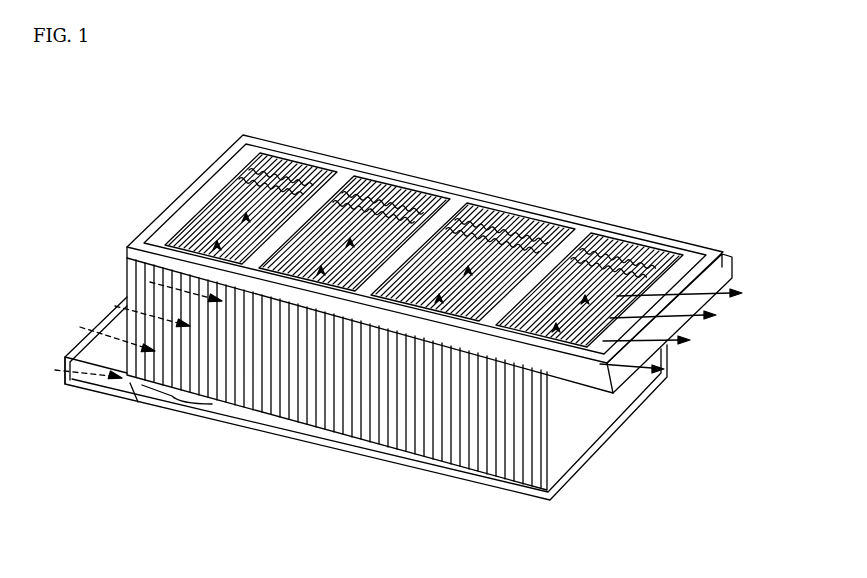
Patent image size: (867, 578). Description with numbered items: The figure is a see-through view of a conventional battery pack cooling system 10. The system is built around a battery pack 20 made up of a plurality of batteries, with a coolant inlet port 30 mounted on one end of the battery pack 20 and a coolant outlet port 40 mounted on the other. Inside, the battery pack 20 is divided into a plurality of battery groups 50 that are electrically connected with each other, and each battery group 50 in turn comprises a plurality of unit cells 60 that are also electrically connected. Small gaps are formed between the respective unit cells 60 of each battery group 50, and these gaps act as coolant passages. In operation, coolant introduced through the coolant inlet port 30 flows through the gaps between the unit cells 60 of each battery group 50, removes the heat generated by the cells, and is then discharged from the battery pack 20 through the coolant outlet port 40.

The battery pack cooling system 10 is at (80, 115).
The battery pack 20 is at (563, 435).
The coolant inlet port 30 is at (66, 384).
The coolant outlet port 40 is at (683, 245).
The battery group 50 is at (171, 411).
The unit cell 60 is at (372, 413).